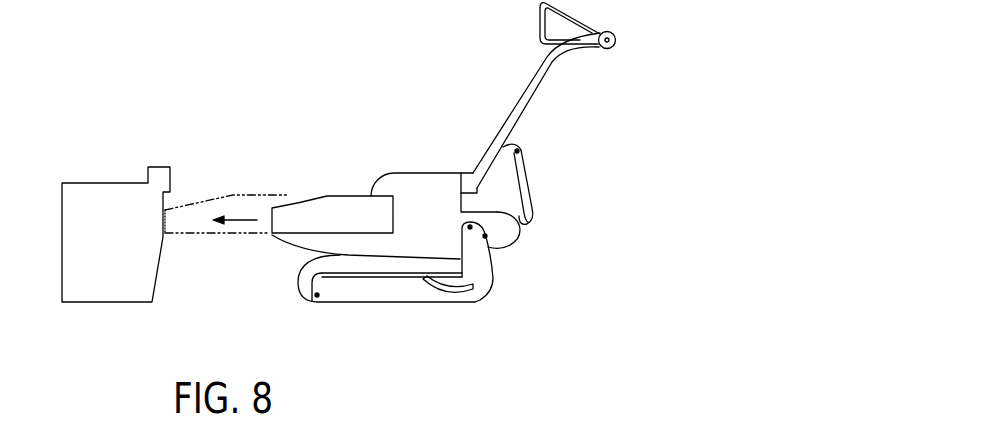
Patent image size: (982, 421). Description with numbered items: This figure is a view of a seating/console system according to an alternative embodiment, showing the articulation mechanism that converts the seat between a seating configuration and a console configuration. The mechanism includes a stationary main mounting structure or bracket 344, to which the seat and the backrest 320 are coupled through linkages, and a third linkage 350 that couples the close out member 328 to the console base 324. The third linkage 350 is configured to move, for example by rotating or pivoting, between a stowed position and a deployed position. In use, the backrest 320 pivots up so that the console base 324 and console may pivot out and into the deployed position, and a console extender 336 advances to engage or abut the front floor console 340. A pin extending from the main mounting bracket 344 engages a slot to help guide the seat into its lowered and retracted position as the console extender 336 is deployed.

The backrest 320 is at (407, 173).
The console base 324 is at (425, 237).
The close out member 328 is at (525, 97).
The console extender 336 is at (318, 202).
The front floor console 340 is at (82, 183).
The main mounting bracket 344 is at (489, 285).
The third linkage 350 is at (532, 180).